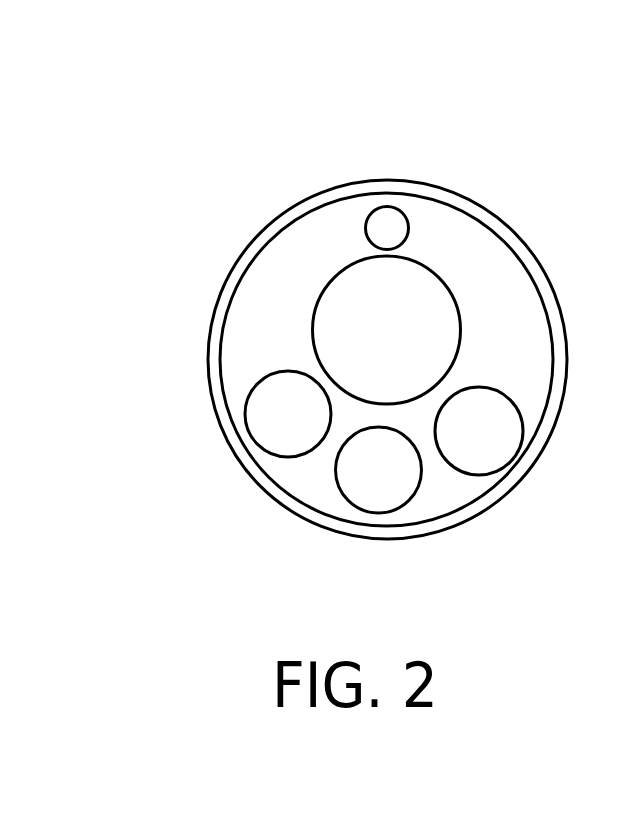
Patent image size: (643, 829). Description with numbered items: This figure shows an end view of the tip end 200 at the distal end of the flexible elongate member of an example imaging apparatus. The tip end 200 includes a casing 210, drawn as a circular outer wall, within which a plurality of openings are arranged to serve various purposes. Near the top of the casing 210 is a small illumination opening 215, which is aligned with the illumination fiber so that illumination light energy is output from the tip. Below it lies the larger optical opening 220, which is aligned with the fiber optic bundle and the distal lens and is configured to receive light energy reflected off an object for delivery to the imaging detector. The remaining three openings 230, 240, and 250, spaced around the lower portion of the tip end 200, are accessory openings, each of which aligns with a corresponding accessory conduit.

The tip end 200 is at (422, 306).
The casing 210 is at (366, 331).
The illumination opening 215 is at (315, 149).
The optical opening 220 is at (293, 301).
The accessory opening 230 is at (235, 408).
The accessory opening 240 is at (301, 499).
The accessory opening 250 is at (537, 459).